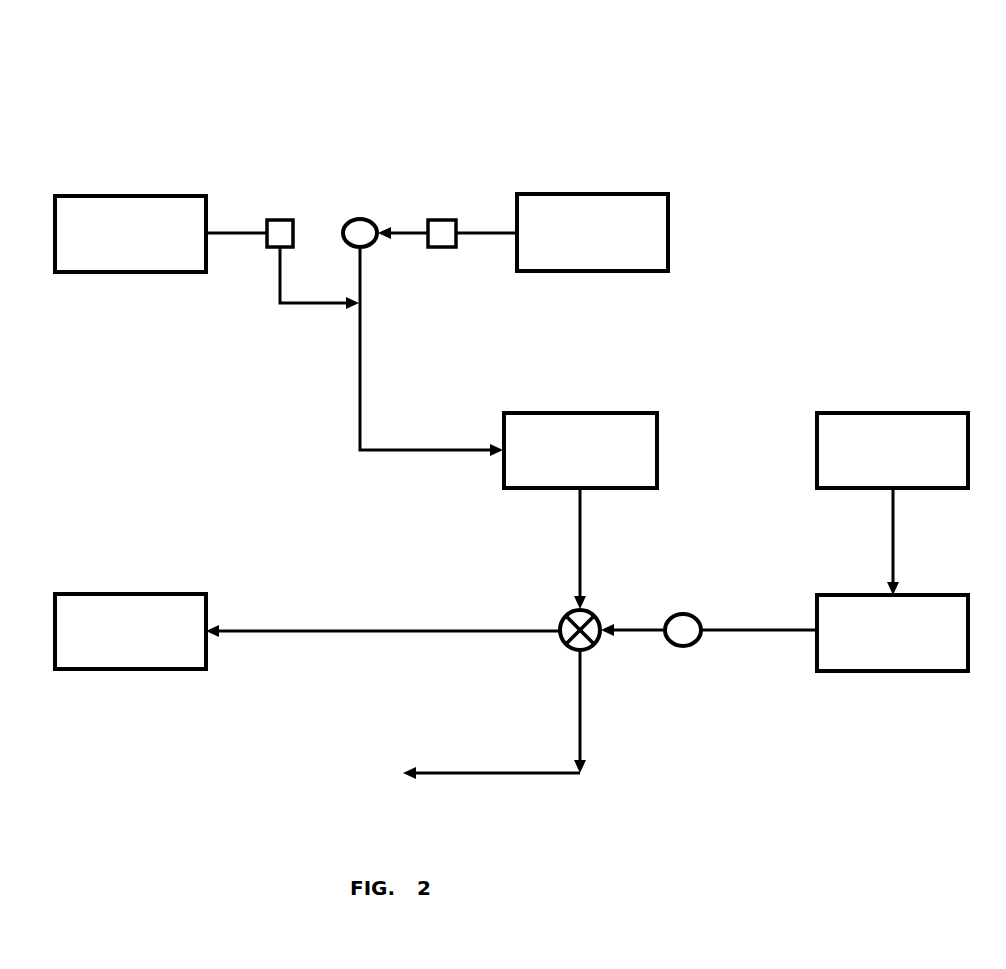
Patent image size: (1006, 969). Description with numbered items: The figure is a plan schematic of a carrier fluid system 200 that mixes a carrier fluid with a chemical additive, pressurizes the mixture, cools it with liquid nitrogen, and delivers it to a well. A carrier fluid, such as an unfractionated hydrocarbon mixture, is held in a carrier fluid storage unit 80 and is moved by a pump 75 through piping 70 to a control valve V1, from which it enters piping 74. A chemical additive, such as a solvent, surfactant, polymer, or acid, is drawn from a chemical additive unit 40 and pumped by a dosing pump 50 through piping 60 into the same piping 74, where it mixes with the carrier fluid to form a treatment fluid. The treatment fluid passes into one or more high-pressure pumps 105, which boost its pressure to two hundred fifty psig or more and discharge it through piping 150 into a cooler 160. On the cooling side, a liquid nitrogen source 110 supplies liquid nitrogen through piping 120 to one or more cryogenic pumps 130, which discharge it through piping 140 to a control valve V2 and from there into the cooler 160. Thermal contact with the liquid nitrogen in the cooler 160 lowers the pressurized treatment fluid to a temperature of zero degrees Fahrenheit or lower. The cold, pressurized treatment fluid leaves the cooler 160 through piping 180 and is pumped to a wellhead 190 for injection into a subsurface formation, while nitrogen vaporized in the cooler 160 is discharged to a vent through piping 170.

The carrier fluid system 200 is at (282, 68).
The chemical additive unit 40 is at (133, 195).
The dosing pump 50 is at (281, 219).
The piping 60 is at (305, 307).
The control valve V1 is at (363, 215).
The piping 70 is at (417, 235).
The pump 75 is at (445, 218).
The carrier fluid storage unit 80 is at (577, 193).
The piping 74 is at (360, 363).
The high-pressure pump 105 is at (583, 413).
The piping 150 is at (581, 548).
The cooler 160 is at (593, 610).
The control valve V2 is at (683, 612).
The piping 140 is at (628, 633).
The liquid nitrogen source 110 is at (903, 413).
The piping 120 is at (895, 517).
The cryogenic pump 130 is at (862, 593).
The piping 180 is at (322, 630).
The wellhead 190 is at (133, 593).
The piping 170 is at (450, 771).